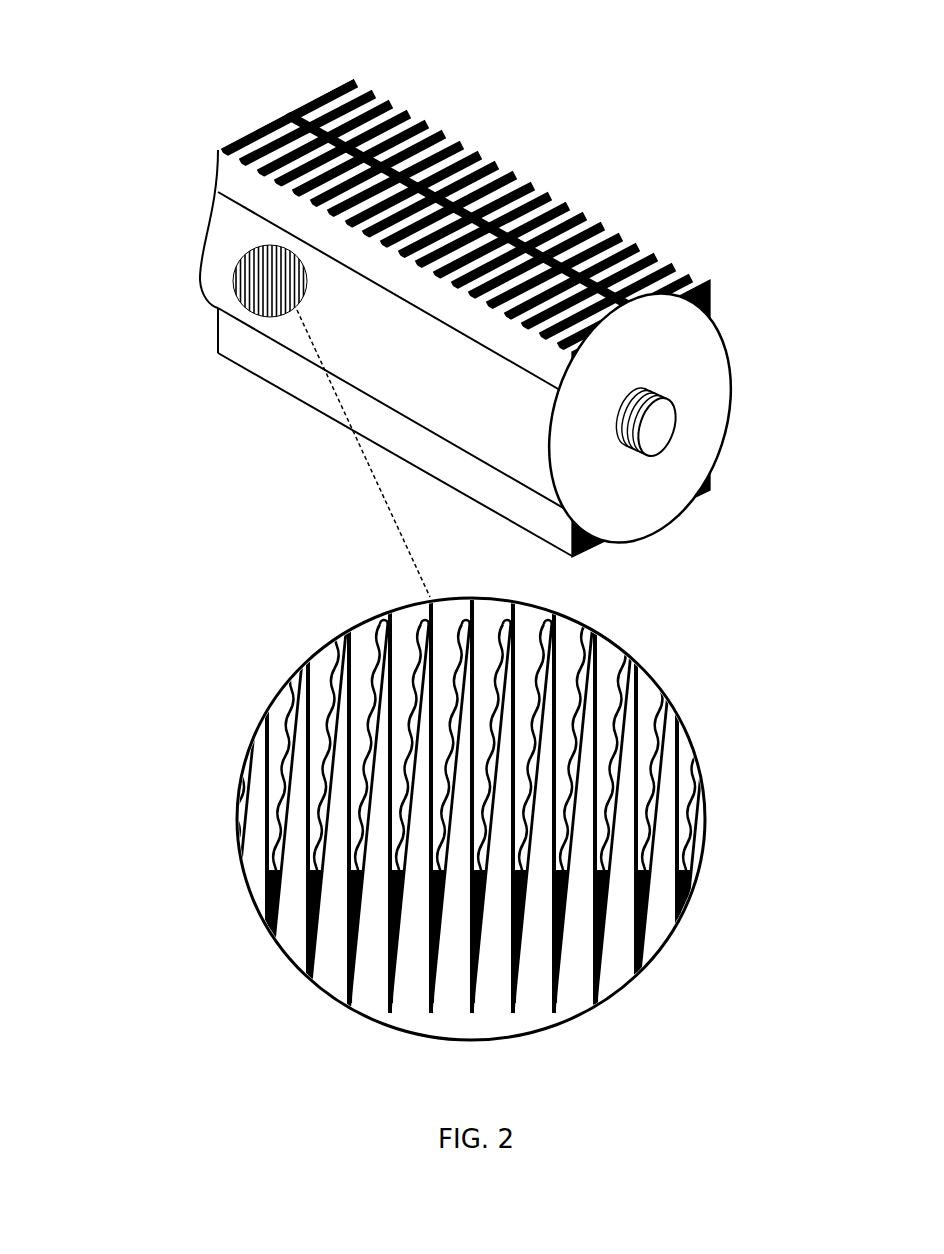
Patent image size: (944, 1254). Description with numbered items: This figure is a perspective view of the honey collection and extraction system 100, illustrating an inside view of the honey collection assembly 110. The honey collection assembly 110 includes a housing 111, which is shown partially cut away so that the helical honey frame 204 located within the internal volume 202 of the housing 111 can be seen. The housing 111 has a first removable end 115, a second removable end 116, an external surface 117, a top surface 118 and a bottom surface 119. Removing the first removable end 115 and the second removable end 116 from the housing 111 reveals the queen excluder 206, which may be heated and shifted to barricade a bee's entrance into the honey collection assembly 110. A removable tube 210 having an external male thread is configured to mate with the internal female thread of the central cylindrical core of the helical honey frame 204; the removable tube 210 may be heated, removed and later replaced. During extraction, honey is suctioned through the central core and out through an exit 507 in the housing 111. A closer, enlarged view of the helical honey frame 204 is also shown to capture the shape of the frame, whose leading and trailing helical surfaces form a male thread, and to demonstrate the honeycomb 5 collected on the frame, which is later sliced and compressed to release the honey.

The honey collection and extraction system 100 is at (738, 71).
The honey collection assembly 110 is at (758, 97).
The housing 111 is at (536, 154).
The first removable end 115 is at (705, 365).
The second removable end 116 is at (212, 226).
The external surface 117 is at (204, 257).
The top surface 118 is at (215, 141).
The bottom surface 119 is at (227, 372).
The internal volume 202 is at (227, 298).
The helical honey frame 204 is at (306, 630).
The queen excluder 206 is at (401, 94).
The removable tube 210 is at (688, 416).
The exit 507 is at (188, 274).
The honeycomb 5 is at (274, 752).